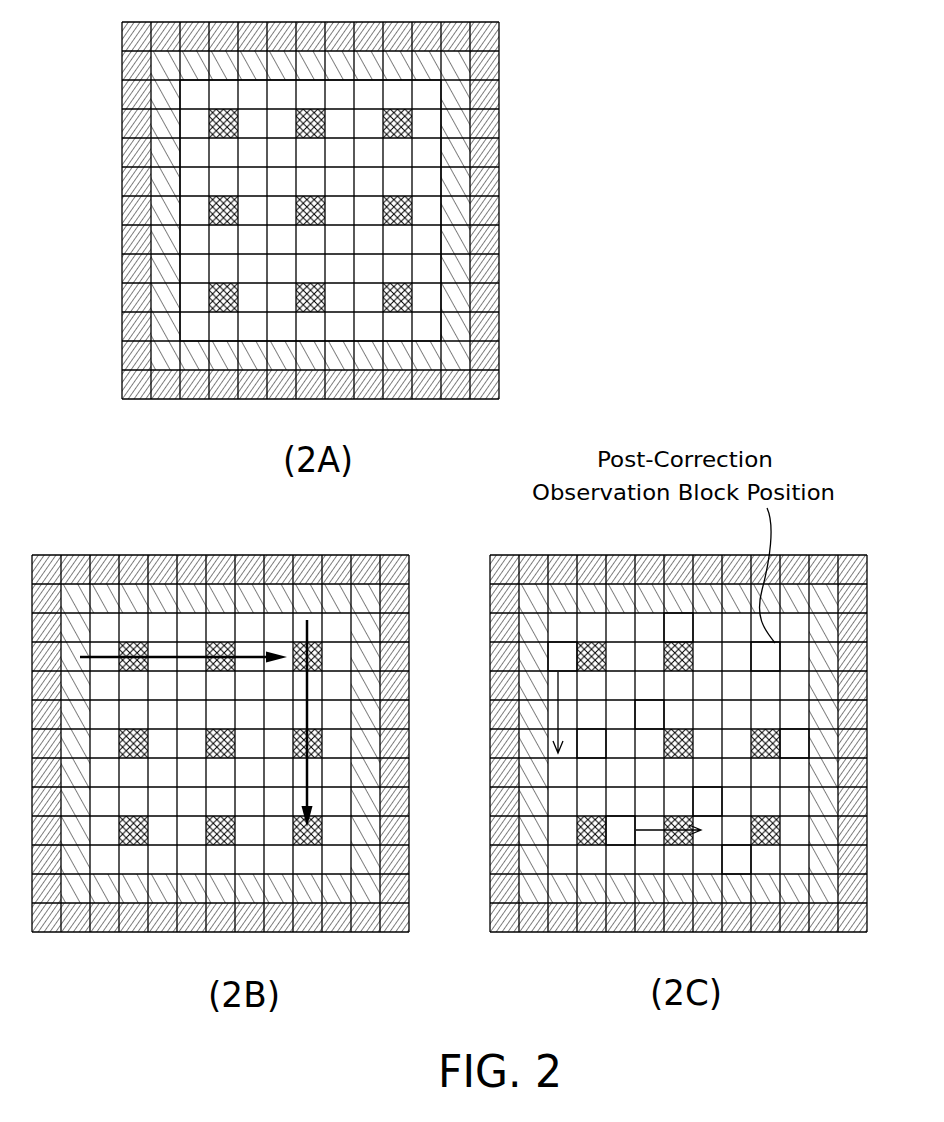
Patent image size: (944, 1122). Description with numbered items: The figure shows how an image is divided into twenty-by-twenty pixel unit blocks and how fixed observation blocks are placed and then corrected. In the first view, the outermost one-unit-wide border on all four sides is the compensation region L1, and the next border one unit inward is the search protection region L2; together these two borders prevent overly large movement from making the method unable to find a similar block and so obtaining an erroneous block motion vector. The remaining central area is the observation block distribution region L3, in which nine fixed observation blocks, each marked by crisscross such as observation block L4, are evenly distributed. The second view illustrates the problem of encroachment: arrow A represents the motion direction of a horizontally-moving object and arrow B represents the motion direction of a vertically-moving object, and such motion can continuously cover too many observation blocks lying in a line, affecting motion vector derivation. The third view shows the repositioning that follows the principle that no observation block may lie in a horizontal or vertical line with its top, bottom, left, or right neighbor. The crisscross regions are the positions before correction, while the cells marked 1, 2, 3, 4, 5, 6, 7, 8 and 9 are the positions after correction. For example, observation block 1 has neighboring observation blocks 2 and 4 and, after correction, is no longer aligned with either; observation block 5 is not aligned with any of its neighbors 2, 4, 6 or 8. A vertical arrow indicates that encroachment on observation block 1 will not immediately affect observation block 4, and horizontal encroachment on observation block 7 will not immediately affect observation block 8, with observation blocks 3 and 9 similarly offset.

In FIG. 2A, the compensation region L1 is at (501, 32).
In FIG. 2A, the search protection region L2 is at (455, 97).
In FIG. 2A, the observation block distribution region L3 is at (428, 162).
In FIG. 2A, the observation block L4 is at (413, 293).
In FIG. 2B, the arrow representing motion direction of a horizontally-moving object A is at (161, 657).
In FIG. 2B, the arrow representing motion direction of a vertically-moving object B is at (307, 688).
In FIG. 2C, the observation block 1 is at (562, 695).
In FIG. 2C, the observation block 2 is at (678, 628).
In FIG. 2C, the observation block 3 is at (765, 657).
In FIG. 2C, the observation block 4 is at (591, 744).
In FIG. 2C, the observation block 5 is at (649, 715).
In FIG. 2C, the observation block 6 is at (794, 744).
In FIG. 2C, the observation block 7 is at (653, 831).
In FIG. 2C, the observation block 8 is at (707, 802).
In FIG. 2C, the observation block 9 is at (736, 860).